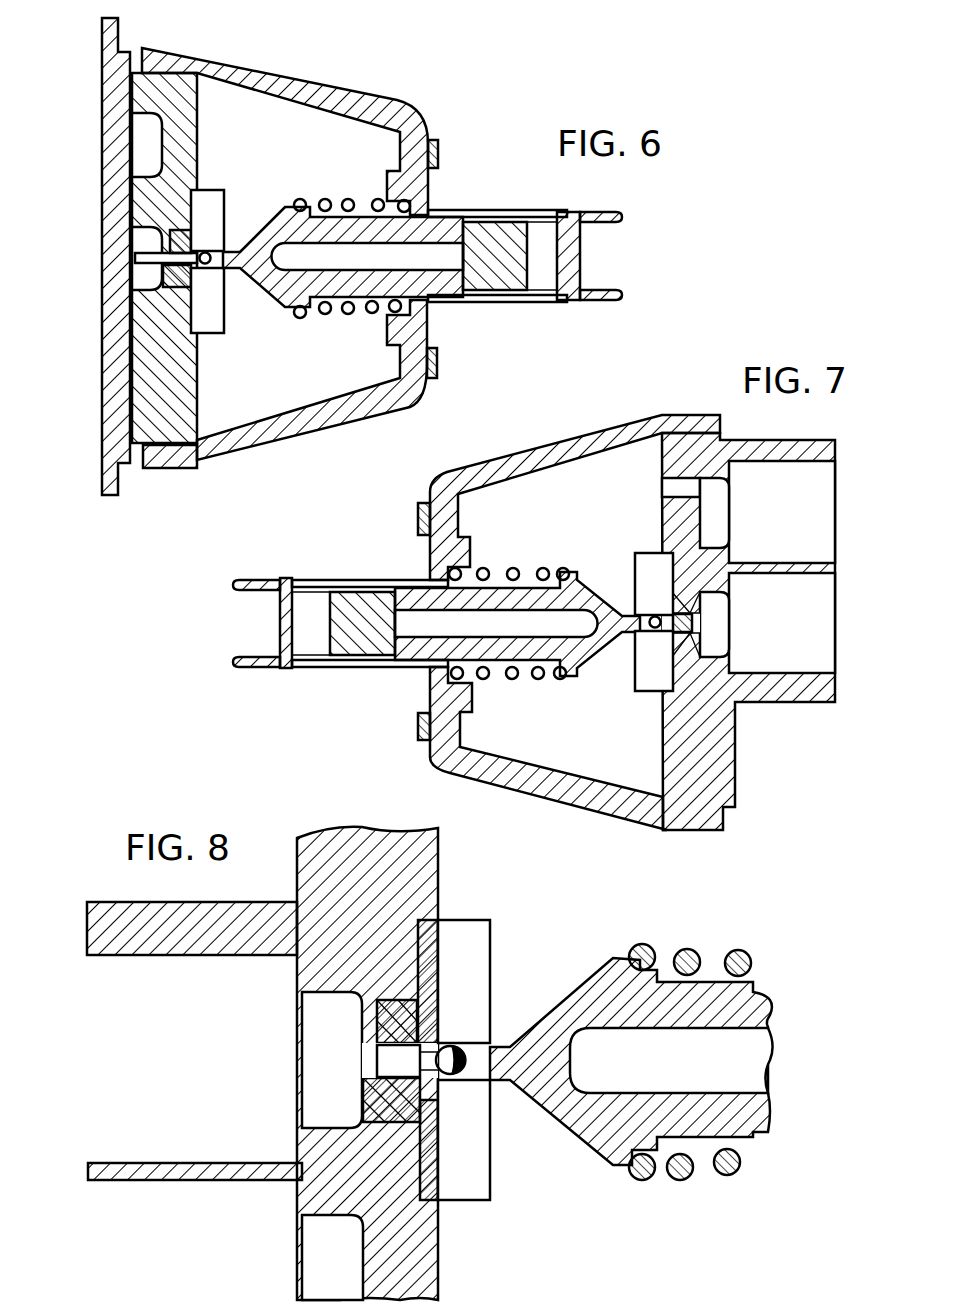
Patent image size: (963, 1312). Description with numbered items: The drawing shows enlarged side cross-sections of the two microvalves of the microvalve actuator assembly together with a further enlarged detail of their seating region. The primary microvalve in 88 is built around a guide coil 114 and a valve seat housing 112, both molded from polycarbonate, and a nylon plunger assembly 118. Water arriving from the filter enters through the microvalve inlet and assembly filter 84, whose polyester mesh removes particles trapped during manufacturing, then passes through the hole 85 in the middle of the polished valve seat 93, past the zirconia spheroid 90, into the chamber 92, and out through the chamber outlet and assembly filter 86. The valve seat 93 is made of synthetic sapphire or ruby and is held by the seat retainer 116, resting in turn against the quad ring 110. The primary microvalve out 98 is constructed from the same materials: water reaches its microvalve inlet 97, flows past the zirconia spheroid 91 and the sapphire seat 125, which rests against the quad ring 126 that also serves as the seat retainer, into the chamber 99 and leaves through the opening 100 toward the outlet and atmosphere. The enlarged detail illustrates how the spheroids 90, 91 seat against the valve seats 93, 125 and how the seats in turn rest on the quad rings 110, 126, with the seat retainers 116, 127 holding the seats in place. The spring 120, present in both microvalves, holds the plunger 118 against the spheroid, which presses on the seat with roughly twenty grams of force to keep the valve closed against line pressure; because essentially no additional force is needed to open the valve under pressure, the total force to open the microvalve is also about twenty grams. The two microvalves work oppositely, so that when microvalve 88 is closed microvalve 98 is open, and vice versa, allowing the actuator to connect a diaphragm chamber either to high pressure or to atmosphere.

In FIG. 6, the microvalve inlet and assembly filter 84 is at (116, 258).
In FIG. 6, the hole 85 is at (143, 270).
In FIG. 8, the hole 85 is at (390, 1058).
In FIG. 6, the chamber outlet and assembly filter 86 is at (143, 141).
In FIG. 6, the primary microvalve in 88 is at (236, 214).
In FIG. 6, the spheroid 90 is at (210, 266).
In FIG. 8, the spheroid 90 is at (508, 1112).
In FIG. 7, the spheroid 91 is at (652, 630).
In FIG. 8, the spheroid 91 is at (465, 1078).
In FIG. 6, the chamber 92 is at (343, 358).
In FIG. 6, the valve seat 93 is at (200, 272).
In FIG. 8, the valve seat 93 is at (449, 1124).
In FIG. 7, the microvalve inlet and assembly filter 97 is at (717, 640).
In FIG. 7, the primary microvalve out 98 is at (627, 576).
In FIG. 7, the chamber 99 is at (522, 498).
In FIG. 7, the opening 100 is at (717, 512).
In FIG. 6, the quad ring 110 is at (107, 347).
In FIG. 8, the quad ring 110 is at (233, 1041).
In FIG. 6, the valve seat housing 112 is at (197, 455).
In FIG. 8, the valve seat housing 112 is at (342, 848).
In FIG. 6, the guide coil 114 is at (253, 68).
In FIG. 6, the seat retainer 116 is at (213, 197).
In FIG. 8, the seat retainer 116 is at (513, 1034).
In FIG. 6, the plunger assembly 118 is at (422, 226).
In FIG. 7, the plunger assembly 118 is at (436, 620).
In FIG. 8, the plunger assembly 118 is at (747, 997).
In FIG. 6, the spring 120 is at (325, 199).
In FIG. 7, the spring 120 is at (510, 568).
In FIG. 8, the spring 120 is at (687, 943).
In FIG. 7, the sapphire seat 125 is at (698, 622).
In FIG. 8, the sapphire seat 125 is at (435, 1082).
In FIG. 7, the seat retainer 126 is at (748, 631).
In FIG. 8, the seat retainer 126 is at (195, 1171).
In FIG. 7, the valve block 127 is at (648, 678).
In FIG. 8, the valve block 127 is at (464, 1140).